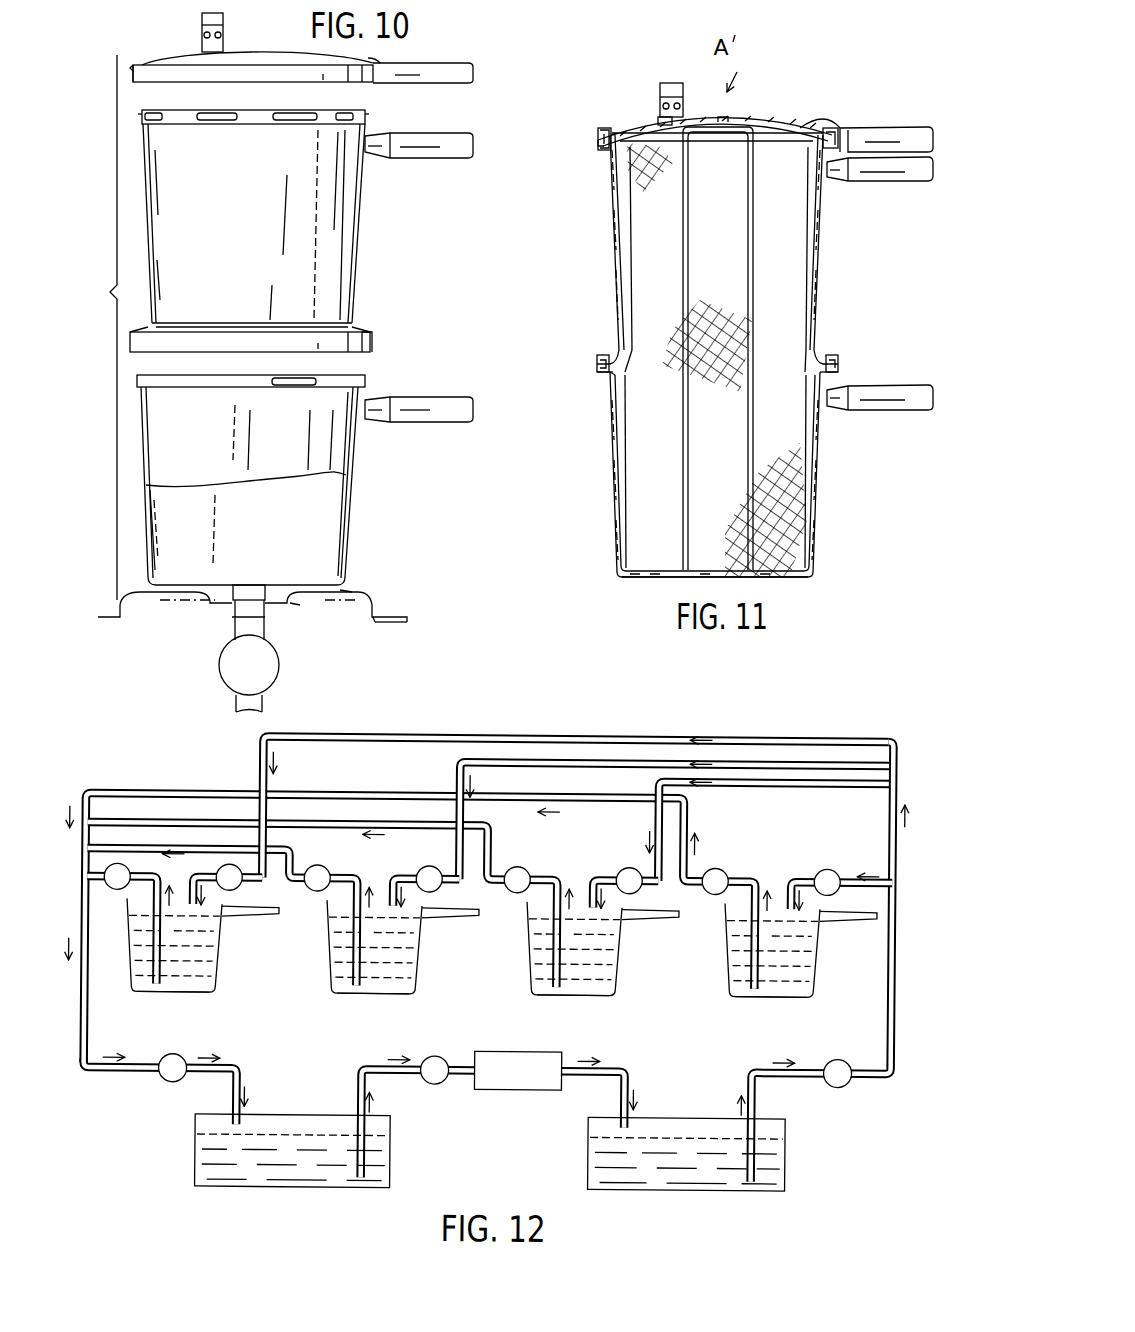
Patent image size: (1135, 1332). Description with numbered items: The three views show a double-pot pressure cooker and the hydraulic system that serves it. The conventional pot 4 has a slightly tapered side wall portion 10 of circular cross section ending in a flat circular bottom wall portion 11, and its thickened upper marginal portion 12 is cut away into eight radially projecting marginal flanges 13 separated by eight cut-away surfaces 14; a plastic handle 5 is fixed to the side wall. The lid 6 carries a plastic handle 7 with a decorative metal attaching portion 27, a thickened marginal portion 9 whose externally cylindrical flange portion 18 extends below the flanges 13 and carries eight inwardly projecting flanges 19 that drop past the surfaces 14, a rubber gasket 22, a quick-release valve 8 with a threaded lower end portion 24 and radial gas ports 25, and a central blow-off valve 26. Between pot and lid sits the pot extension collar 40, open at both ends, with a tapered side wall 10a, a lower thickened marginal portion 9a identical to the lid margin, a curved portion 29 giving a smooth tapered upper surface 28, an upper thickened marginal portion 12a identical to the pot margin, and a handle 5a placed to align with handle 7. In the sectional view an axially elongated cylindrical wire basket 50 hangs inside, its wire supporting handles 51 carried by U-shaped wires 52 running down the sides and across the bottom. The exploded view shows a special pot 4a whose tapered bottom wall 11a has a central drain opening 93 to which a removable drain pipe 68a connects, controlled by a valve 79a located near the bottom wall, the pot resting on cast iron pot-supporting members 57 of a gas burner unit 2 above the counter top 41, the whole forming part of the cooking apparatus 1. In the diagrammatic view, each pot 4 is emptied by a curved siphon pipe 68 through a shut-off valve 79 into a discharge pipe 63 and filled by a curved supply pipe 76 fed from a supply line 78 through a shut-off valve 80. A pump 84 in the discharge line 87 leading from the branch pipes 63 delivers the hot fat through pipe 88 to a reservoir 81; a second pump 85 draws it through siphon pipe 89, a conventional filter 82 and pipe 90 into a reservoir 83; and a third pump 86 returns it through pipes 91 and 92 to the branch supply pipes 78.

In FIG. 10, the filtering apparatus 1 is at (408, 607).
In FIG. 10, the gas burner unit 2 is at (376, 590).
In FIG. 11, the pot 4 is at (612, 468).
In FIG. 12, the pot 4 is at (221, 978).
In FIG. 10, the pot 4a is at (360, 465).
In FIG. 10, the handle 5 is at (450, 398).
In FIG. 11, the handle 5 is at (898, 386).
In FIG. 12, the handle 5 is at (257, 908).
In FIG. 10, the handle 5a is at (437, 150).
In FIG. 11, the handle 5a is at (872, 178).
In FIG. 10, the lid 6 is at (286, 52).
In FIG. 11, the lid 6 is at (773, 116).
In FIG. 10, the handle 7 is at (458, 63).
In FIG. 11, the handle 7 is at (880, 128).
In FIG. 10, the valve 8 is at (202, 20).
In FIG. 10, the thickened marginal portion 9 is at (135, 63).
In FIG. 11, the thickened marginal portion 9 is at (598, 136).
In FIG. 10, the thickened marginal portion 9a is at (372, 336).
In FIG. 11, the thickened marginal portion 9a is at (840, 363).
In FIG. 10, the side wall portion 10 is at (147, 443).
In FIG. 11, the side wall portion 10 is at (612, 434).
In FIG. 10, the side wall 10a is at (150, 190).
In FIG. 11, the side wall 10a is at (615, 299).
In FIG. 11, the bottom wall portion 11 is at (643, 580).
In FIG. 12, the bottom wall portion 11 is at (205, 993).
In FIG. 10, the tapered bottom wall 11a is at (300, 606).
In FIG. 10, the upper marginal portion 12 is at (290, 387).
In FIG. 11, the upper marginal portion 12 is at (626, 377).
In FIG. 10, the thickened marginal portion 12a is at (275, 125).
In FIG. 11, the thickened marginal portion 12a is at (655, 150).
In FIG. 10, the radially projecting marginal flanges 13 is at (184, 122).
In FIG. 10, the cut-away surfaces 14 is at (215, 122).
In FIG. 10, the cylindrical flange portion 18 is at (133, 72).
In FIG. 11, the cylindrical flange portion 18 is at (598, 142).
In FIG. 11, the radially inwardly projecting flanges 19 is at (604, 150).
In FIG. 11, the rubber gasket 22 is at (612, 132).
In FIG. 11, the threaded lower end portion 24 is at (660, 119).
In FIG. 10, the radial gas ports 25 is at (205, 36).
In FIG. 11, the radial gas ports 25 is at (665, 103).
In FIG. 11, the blow-off valve 26 is at (725, 117).
In FIG. 10, the decorative metal attaching portion 27 is at (380, 62).
In FIG. 11, the decorative metal attaching portion 27 is at (822, 121).
In FIG. 10, the tapered upper surface 28 is at (198, 334).
In FIG. 11, the curved portion 29 is at (632, 360).
In FIG. 10, the pot extension collar 40 is at (360, 250).
In FIG. 11, the pot extension collar 40 is at (612, 251).
In FIG. 10, the counter top 41 is at (410, 617).
In FIG. 11, the wire basket 50 is at (782, 213).
In FIG. 11, the wire supporting handles 51 is at (700, 127).
In FIG. 11, the U-shaped wires 52 is at (689, 248).
In FIG. 10, the pot-supporting members 57 is at (352, 588).
In FIG. 10, the discharge pipe 63 is at (238, 703).
In FIG. 12, the discharge pipe 63 is at (163, 789).
In FIG. 12, the siphon pipe 68 is at (154, 973).
In FIG. 10, the drain pipe 68a is at (240, 626).
In FIG. 12, the supply pipe 76 is at (207, 871).
In FIG. 12, the supply line 78 is at (787, 782).
In FIG. 12, the manual shut-off valve 79 is at (105, 873).
In FIG. 10, the valve 79a is at (280, 666).
In FIG. 12, the manual shut-off valve 80 is at (247, 883).
In FIG. 12, the reservoir 81 is at (205, 1160).
In FIG. 12, the filter 82 is at (530, 1048).
In FIG. 12, the reservoir 83 is at (790, 1163).
In FIG. 12, the pump 84 is at (173, 1082).
In FIG. 12, the pump 85 is at (437, 1082).
In FIG. 12, the pump 86 is at (840, 1053).
In FIG. 12, the discharge line 87 is at (85, 1053).
In FIG. 12, the pipe 88 is at (243, 1118).
In FIG. 12, the siphon pipe 89 is at (358, 1092).
In FIG. 12, the pipe 90 is at (632, 1076).
In FIG. 12, the pipe 91 is at (772, 1128).
In FIG. 12, the pipe 92 is at (893, 1017).
In FIG. 10, the drain opening 93 is at (250, 584).